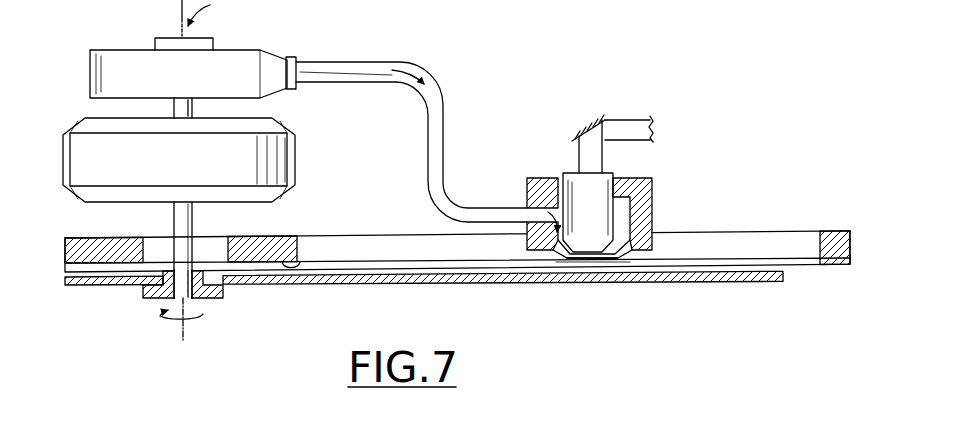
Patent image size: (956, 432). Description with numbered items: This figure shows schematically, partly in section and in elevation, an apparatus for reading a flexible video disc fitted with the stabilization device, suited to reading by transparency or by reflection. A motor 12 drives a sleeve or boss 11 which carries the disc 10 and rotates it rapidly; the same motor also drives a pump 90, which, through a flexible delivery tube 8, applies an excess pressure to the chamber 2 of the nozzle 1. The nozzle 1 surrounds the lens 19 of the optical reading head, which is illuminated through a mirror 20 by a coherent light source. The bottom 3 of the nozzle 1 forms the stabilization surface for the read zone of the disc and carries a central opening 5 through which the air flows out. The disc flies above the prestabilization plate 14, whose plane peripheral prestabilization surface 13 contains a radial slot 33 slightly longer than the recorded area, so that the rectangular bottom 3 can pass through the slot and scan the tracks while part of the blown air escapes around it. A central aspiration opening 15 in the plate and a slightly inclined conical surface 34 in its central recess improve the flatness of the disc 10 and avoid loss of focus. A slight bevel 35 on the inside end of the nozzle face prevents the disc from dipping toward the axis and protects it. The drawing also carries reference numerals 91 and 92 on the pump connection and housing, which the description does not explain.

The nozzle 1 is at (611, 195).
The chamber 2 is at (552, 200).
The bottom 3 is at (632, 262).
The opening 5 is at (596, 262).
The delivery tube 8 is at (444, 125).
The disc 10 is at (296, 286).
The sleeve or boss 11 is at (207, 300).
The motor 12 is at (297, 158).
The prestabilization surface 13 is at (806, 268).
The prestabilization plate 14 is at (832, 231).
The central aspiration opening 15 is at (222, 250).
The lens 19 is at (599, 223).
The mirror 20 is at (583, 128).
The radial slot 33 is at (748, 244).
The conical surface 34 is at (301, 257).
The bevel 35 is at (557, 262).
The pump 90 is at (90, 62).
The coupling 91 is at (296, 58).
The switch 92 is at (214, 40).